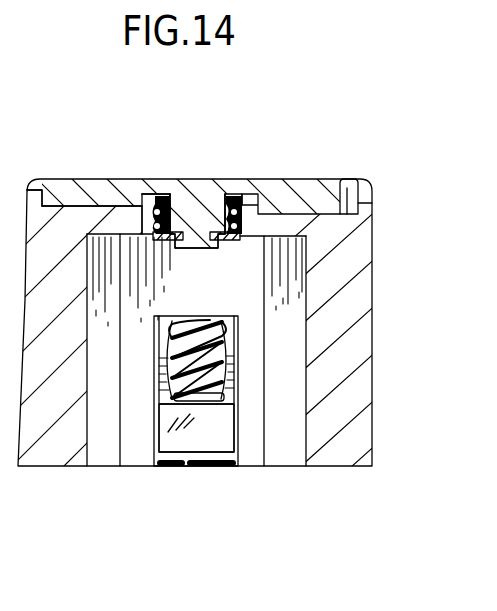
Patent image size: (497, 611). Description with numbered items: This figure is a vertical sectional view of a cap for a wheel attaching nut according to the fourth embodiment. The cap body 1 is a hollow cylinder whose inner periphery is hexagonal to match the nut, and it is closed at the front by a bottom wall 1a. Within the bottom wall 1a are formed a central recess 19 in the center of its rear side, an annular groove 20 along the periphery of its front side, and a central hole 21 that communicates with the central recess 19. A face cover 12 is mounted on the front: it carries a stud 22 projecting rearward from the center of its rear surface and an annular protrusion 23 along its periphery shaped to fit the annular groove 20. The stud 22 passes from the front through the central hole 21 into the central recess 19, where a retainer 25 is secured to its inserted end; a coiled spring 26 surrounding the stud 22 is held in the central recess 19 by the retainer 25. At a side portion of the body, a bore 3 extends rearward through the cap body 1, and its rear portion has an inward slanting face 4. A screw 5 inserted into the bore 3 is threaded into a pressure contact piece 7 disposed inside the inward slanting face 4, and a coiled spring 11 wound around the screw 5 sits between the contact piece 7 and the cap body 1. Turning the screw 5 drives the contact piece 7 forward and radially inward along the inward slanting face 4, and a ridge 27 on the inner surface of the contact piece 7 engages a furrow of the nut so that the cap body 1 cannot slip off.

The cap body 1 is at (55, 453).
The bottom wall 1a is at (283, 228).
The bore 3 is at (168, 353).
The inward slanting face 4 is at (240, 356).
The screw 5 is at (224, 393).
The pressure contact piece 7 is at (207, 437).
The coiled spring 11 is at (222, 345).
The face cover 12 is at (106, 186).
The central recess 19 is at (256, 241).
The annular groove 20 is at (63, 179).
The central hole 21 is at (175, 196).
The stud 22 is at (208, 203).
The annular protrusion 23 is at (347, 179).
The retainer 25 is at (230, 254).
The coiled spring 26 is at (154, 194).
The ridge 27 is at (180, 473).